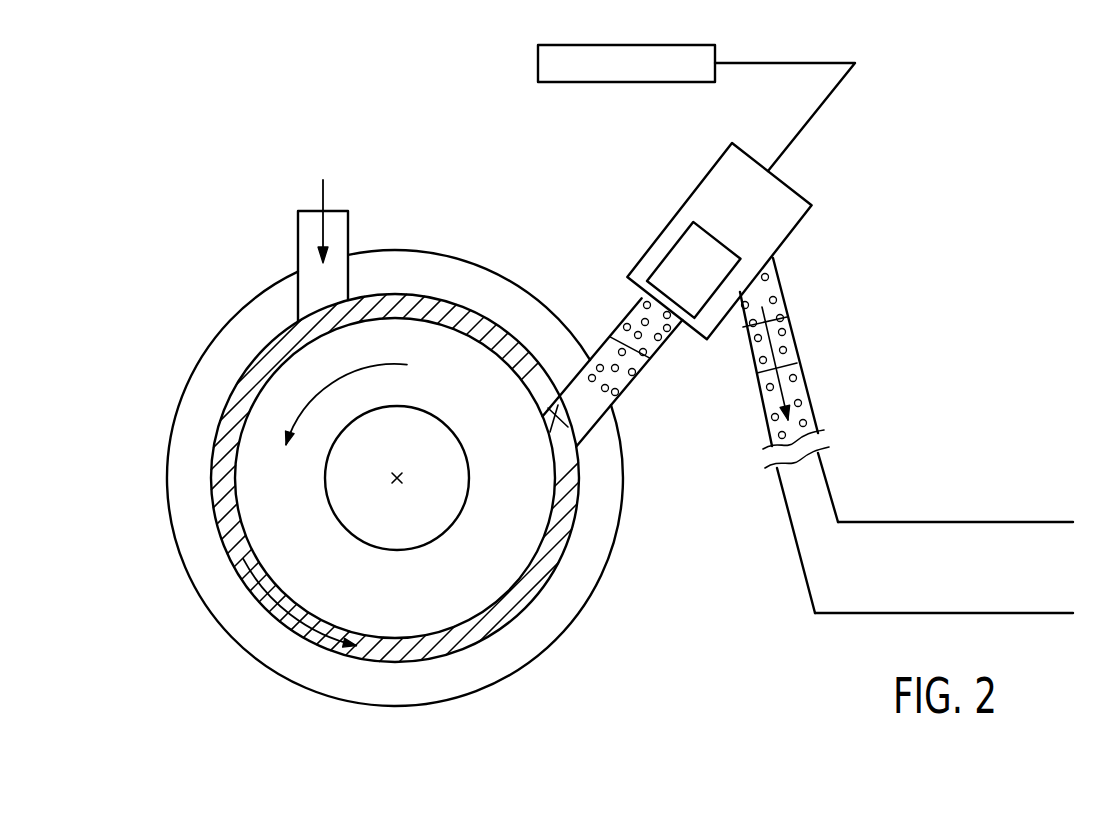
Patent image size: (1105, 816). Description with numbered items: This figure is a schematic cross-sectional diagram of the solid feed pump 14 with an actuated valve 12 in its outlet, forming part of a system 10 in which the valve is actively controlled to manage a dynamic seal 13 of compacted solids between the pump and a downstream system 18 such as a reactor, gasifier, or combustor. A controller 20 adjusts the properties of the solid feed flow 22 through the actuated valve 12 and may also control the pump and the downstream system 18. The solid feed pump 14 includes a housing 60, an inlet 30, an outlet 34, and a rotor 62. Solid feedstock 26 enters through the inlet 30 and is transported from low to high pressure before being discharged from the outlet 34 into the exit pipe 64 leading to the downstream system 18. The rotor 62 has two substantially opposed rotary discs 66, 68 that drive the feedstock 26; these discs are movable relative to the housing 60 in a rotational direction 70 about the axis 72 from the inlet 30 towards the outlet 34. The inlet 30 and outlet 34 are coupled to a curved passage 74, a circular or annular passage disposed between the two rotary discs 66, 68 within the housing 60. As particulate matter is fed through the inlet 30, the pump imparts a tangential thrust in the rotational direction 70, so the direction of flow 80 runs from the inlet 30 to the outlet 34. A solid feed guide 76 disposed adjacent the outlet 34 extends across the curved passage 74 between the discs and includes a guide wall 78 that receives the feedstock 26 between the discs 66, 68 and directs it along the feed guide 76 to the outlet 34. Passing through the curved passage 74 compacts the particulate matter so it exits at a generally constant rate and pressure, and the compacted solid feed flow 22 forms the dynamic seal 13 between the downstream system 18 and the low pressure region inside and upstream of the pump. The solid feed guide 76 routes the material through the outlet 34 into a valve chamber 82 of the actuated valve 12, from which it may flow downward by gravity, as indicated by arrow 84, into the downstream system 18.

The system 10 is at (98, 118).
The actuated valve 12 is at (792, 183).
The dynamic seal 13 is at (628, 305).
The solid feed pump 14 is at (553, 275).
The downstream system 18 is at (963, 584).
The controller 20 is at (627, 43).
The solid feed flow 22 is at (750, 353).
The solid feedstock 26 is at (325, 192).
The inlet 30 is at (298, 235).
The outlet 34 is at (637, 383).
The housing 60 is at (168, 432).
The rotor 62 is at (430, 663).
The exit pipe 64 is at (805, 393).
The rotary disc 66 is at (568, 517).
The rotary disc 68 is at (537, 577).
The rotational direction 70 is at (335, 377).
The axis 72 is at (400, 474).
The curved passage 74 is at (213, 513).
The solid feed guide 76 is at (575, 380).
The guide wall 78 is at (545, 410).
The direction of flow 80 is at (292, 630).
The valve chamber 82 is at (663, 247).
The arrow 84 is at (762, 395).